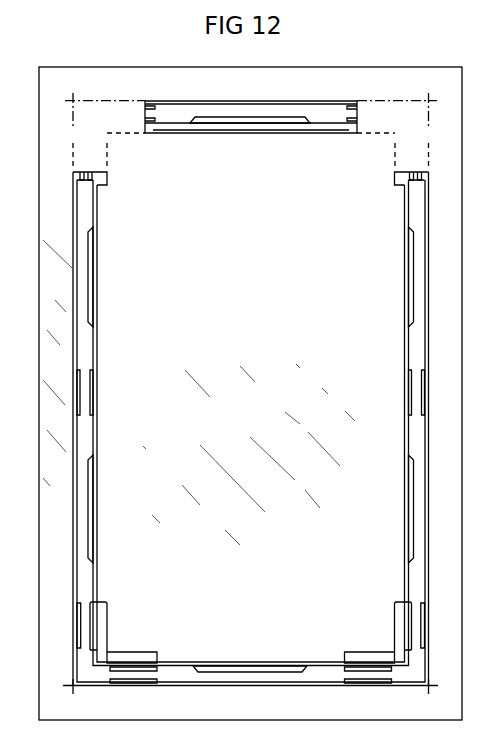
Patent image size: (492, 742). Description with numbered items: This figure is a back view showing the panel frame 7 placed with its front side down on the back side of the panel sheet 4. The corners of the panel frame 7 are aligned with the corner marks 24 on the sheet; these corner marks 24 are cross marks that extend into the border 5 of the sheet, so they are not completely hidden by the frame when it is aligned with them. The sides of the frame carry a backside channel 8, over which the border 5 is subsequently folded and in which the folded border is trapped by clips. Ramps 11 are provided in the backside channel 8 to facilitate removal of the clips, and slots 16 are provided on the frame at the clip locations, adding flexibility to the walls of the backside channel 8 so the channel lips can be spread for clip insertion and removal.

The panel sheet 4 is at (263, 284).
The border 5 is at (330, 74).
The panel frame 7 is at (404, 208).
The backside channel 8 is at (88, 352).
The ramps 11 is at (194, 121).
The slots 16 is at (93, 398).
The corner marks 24 is at (73, 100).